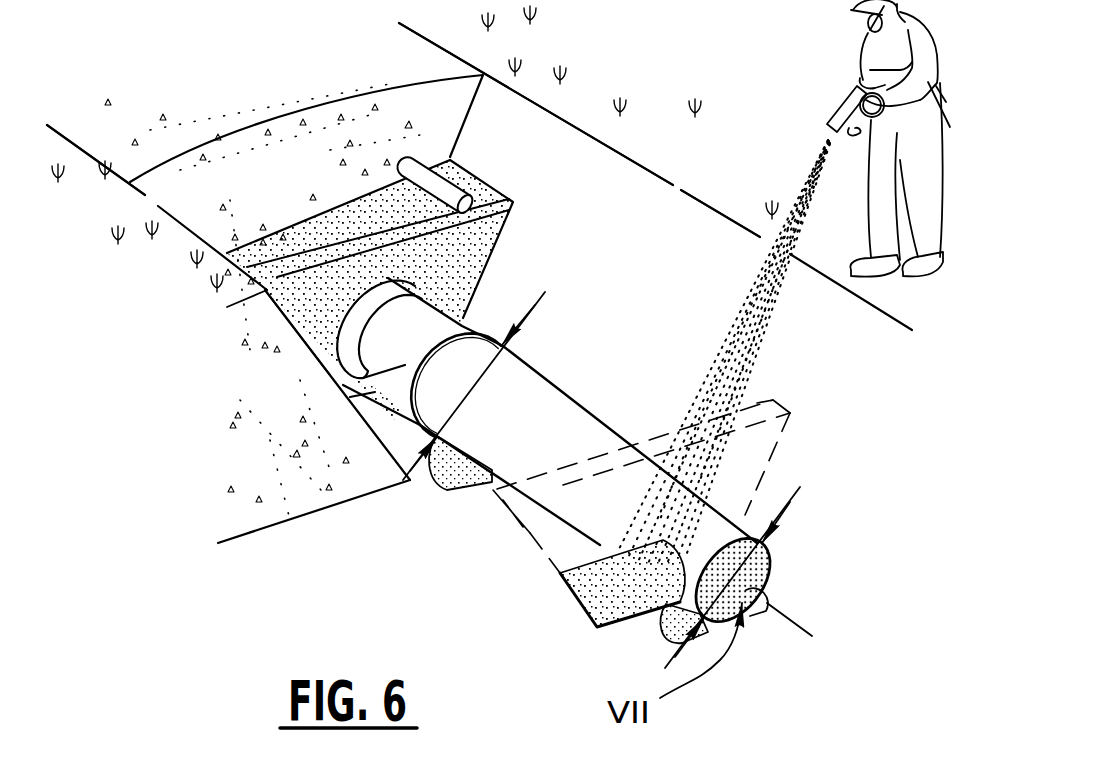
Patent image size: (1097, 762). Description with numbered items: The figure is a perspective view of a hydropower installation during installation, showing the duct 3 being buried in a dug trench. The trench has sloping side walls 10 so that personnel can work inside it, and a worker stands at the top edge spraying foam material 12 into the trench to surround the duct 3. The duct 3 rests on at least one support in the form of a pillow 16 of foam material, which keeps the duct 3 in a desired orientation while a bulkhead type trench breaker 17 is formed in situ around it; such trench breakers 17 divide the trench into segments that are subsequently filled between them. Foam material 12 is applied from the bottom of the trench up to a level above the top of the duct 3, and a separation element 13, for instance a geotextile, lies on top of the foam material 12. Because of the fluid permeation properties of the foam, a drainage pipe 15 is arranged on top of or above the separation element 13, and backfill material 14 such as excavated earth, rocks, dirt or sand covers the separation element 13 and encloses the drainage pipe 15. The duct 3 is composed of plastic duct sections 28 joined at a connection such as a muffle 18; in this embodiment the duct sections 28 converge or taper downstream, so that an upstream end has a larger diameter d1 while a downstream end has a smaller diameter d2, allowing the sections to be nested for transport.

The duct 3 is at (579, 431).
The sloping side walls 10 is at (690, 222).
The foam material 12 is at (280, 232).
The separation element 13 is at (257, 234).
The backfill material 14 is at (423, 62).
The drainage pipe 15 is at (447, 192).
The pillow 16 is at (457, 480).
The trench breaker 17 is at (483, 227).
The muffle 18 is at (405, 365).
The converging duct section 28 is at (557, 417).
The larger diameter d1 is at (484, 365).
The smaller diameter d2 is at (744, 560).